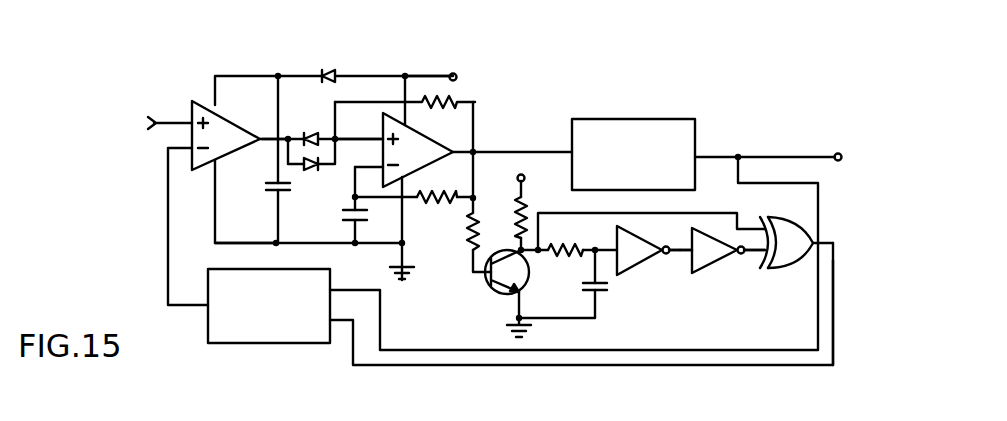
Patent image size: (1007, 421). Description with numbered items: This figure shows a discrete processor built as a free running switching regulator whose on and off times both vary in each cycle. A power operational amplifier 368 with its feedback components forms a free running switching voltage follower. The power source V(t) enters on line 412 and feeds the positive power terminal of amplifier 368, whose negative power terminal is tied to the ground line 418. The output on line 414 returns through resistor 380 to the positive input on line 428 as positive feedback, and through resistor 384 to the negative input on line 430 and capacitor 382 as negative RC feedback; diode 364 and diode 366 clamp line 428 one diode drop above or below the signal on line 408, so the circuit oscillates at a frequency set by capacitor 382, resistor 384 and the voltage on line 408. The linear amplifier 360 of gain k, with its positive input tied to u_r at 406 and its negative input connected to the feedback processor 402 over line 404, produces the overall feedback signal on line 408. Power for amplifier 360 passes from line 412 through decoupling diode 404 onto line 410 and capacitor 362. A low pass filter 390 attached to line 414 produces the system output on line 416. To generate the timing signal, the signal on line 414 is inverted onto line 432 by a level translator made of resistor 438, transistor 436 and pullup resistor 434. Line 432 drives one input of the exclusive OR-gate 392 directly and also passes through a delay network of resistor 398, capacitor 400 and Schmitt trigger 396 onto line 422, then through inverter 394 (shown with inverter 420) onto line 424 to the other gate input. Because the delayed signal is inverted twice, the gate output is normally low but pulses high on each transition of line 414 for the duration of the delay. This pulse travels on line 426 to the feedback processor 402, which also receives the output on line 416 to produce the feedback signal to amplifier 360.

The linear amplifier 360 is at (204, 100).
The capacitor 362 is at (262, 186).
The diode 364 is at (318, 135).
The diode 366 is at (308, 178).
The power operational amplifier 368 is at (447, 145).
The resistor 380 is at (461, 102).
The capacitor 382 is at (343, 213).
The resistor 384 is at (413, 200).
The low pass filter 390 is at (628, 119).
The exclusive OR-gate 392 is at (797, 228).
The inverter 394 is at (712, 272).
The Schmitt trigger 396 is at (664, 246).
The resistor 398 is at (548, 258).
The capacitor 400 is at (630, 296).
The feedback processor 402 is at (220, 343).
The decoupling diode / feedback line 404 is at (168, 222).
The input line 406 is at (170, 123).
The line 408 is at (268, 139).
The line 410 is at (241, 76).
The line 412 is at (405, 76).
The line 414 is at (493, 152).
The line 416 is at (716, 157).
The ground line 418 is at (285, 247).
The inverter 420 is at (612, 262).
The line 422 is at (677, 255).
The line 424 is at (750, 255).
The line 426 is at (834, 310).
The line 428 is at (357, 139).
The line 430 is at (375, 167).
The line 432 is at (540, 243).
The pullup resistor 434 is at (516, 206).
The transistor 436 is at (490, 290).
The resistor 438 is at (468, 240).